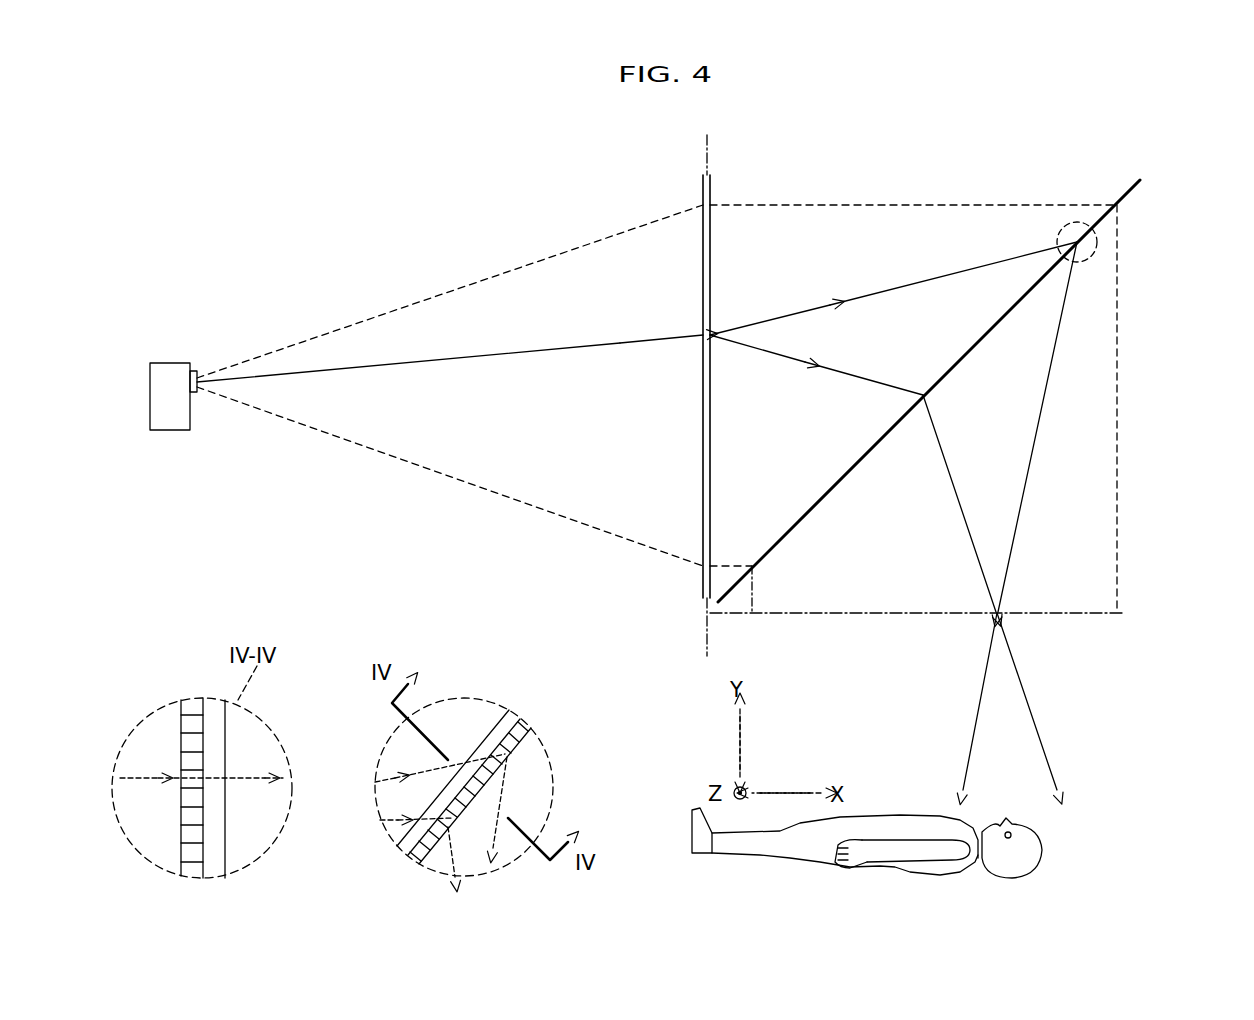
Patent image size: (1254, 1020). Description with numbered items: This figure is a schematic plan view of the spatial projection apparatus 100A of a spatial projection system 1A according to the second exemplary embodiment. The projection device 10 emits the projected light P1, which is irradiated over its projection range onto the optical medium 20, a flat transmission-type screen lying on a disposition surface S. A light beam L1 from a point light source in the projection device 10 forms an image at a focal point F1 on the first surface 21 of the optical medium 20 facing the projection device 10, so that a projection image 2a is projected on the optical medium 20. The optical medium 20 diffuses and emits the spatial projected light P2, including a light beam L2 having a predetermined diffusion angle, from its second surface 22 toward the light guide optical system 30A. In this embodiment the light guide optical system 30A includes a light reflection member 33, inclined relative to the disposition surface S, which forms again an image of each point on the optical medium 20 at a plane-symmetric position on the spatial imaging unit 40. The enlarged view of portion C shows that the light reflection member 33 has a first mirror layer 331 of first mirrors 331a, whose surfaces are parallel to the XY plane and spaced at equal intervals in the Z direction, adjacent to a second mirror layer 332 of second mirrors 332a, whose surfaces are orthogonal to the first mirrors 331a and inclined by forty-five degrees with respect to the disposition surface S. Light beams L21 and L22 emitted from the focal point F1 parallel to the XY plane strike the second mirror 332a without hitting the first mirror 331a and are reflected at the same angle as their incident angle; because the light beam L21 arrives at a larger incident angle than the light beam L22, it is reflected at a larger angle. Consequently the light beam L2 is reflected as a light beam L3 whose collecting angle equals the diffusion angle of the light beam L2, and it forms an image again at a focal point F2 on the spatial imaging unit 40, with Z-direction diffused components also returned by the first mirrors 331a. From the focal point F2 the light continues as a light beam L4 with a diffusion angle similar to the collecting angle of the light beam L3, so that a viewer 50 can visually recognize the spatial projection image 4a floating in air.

The spatial projection system 1A is at (302, 212).
The spatial projection apparatus 100A is at (302, 258).
The projection device 10 is at (163, 432).
The optical medium 20 is at (660, 396).
The first surface 21 is at (702, 440).
The second surface 22 is at (711, 420).
The projection image 2a is at (700, 203).
The disposition surface S is at (704, 384).
The focal point F1 is at (700, 334).
The focal point F2 is at (994, 617).
The light beam L1 is at (545, 348).
The light beam L2 is at (955, 270).
The light beam L3 is at (1046, 415).
The light beam L4 is at (1030, 706).
The light beam L21 is at (240, 778).
The light beam L22 is at (408, 820).
The light reflection member 33 is at (1138, 190).
The first mirror layer 331 is at (187, 728).
The first mirror 331a is at (190, 733).
The second mirror layer 332 is at (226, 821).
The second mirror 332a is at (215, 848).
The light guide optical system 30A is at (1140, 240).
The portion C is at (1092, 256).
The projected light P1 is at (447, 478).
The spatial projected light P2 is at (750, 567).
The spatial imaging unit 40 is at (935, 614).
The spatial projection image 4a is at (1118, 620).
The viewer 50 is at (1092, 826).